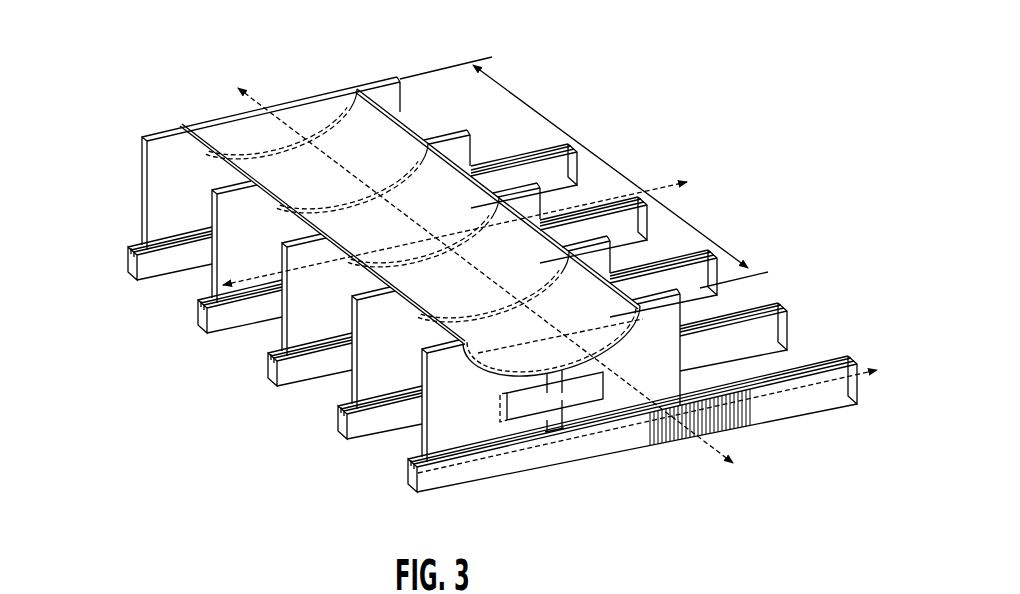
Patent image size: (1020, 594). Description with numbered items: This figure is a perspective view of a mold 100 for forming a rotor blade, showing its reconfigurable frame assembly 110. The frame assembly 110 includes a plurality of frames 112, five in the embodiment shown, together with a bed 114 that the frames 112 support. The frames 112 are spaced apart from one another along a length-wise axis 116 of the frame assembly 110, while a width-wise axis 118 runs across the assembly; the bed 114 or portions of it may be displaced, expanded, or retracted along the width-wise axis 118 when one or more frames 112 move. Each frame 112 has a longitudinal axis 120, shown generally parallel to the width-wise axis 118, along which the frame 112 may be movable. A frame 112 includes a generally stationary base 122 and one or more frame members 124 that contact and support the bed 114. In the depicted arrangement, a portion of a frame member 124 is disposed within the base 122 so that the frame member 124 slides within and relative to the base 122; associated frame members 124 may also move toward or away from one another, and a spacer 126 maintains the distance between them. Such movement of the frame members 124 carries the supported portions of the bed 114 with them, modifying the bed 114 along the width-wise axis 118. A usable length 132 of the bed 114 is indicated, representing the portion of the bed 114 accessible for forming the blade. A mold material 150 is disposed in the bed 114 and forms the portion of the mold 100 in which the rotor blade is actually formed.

The mold 100 is at (168, 92).
The frame assembly 110 is at (120, 160).
The frame 112 is at (119, 265).
The bed 114 is at (449, 160).
The length-wise axis 116 is at (713, 455).
The width-wise axis 118 is at (657, 187).
The longitudinal axis 120 is at (867, 377).
The base 122 is at (782, 403).
The frame member 124 is at (448, 423).
The spacer 126 is at (560, 398).
The usable length 132 is at (557, 130).
The mold material 150 is at (411, 211).